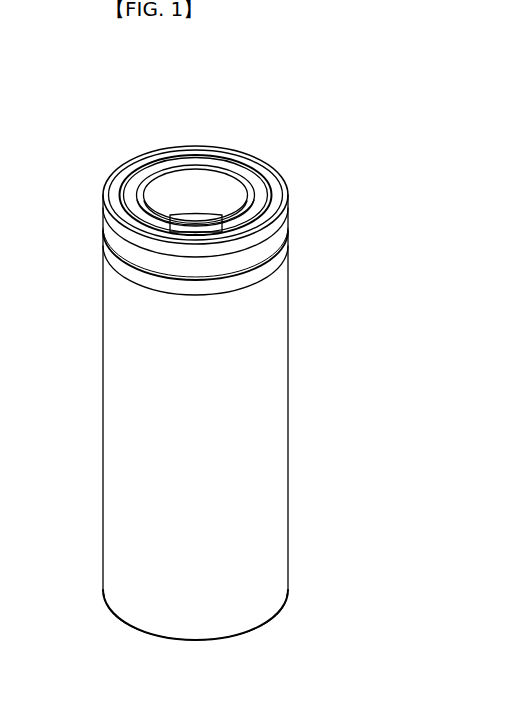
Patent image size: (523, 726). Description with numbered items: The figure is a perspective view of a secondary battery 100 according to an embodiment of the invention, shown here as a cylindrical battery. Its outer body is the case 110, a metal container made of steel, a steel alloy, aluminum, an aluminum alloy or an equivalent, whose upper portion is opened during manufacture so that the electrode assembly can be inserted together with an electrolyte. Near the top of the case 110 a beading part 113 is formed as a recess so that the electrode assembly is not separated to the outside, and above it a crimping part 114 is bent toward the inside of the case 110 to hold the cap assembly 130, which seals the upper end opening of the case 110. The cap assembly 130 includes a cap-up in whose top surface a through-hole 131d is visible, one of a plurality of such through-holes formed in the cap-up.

The secondary battery 100 is at (283, 112).
The case 110 is at (289, 410).
The beading part 113 is at (290, 233).
The crimping part 114 is at (283, 181).
The cap assembly 130 is at (200, 178).
The through-hole 131d is at (187, 225).